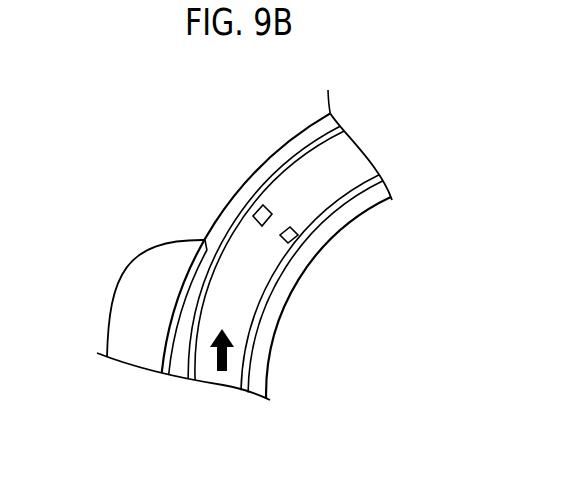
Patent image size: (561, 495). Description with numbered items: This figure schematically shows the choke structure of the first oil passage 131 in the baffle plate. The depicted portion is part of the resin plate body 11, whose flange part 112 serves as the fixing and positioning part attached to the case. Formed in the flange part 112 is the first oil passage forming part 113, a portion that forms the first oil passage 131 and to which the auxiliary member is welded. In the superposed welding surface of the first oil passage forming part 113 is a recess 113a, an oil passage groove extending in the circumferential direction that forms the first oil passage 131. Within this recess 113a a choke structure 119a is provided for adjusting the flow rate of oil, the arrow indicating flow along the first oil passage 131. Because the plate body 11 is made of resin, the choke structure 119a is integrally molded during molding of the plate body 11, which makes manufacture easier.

The plate body 11 is at (242, 188).
The flange part 112 is at (150, 273).
The first oil passage forming part 113 is at (290, 278).
The recess 113a is at (308, 177).
The choke structure 119a is at (296, 222).
The first oil passage 131 is at (229, 375).